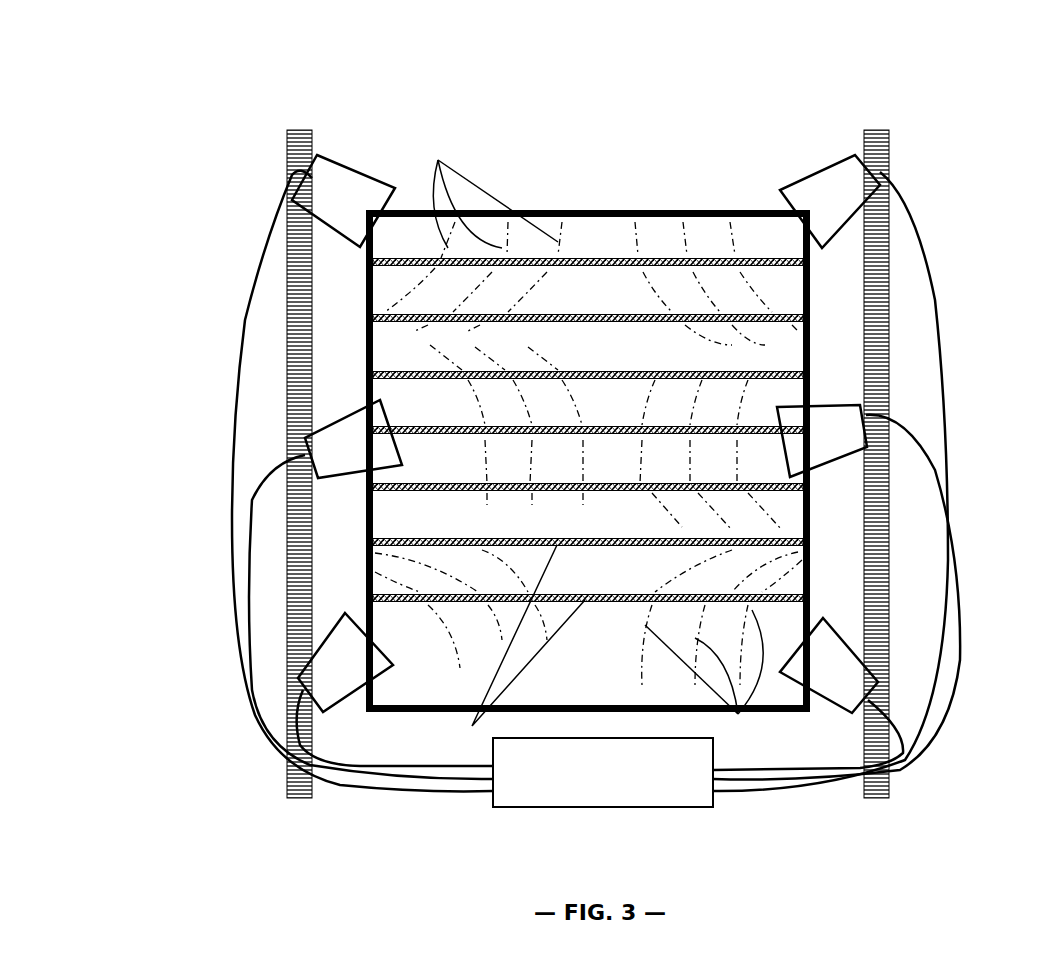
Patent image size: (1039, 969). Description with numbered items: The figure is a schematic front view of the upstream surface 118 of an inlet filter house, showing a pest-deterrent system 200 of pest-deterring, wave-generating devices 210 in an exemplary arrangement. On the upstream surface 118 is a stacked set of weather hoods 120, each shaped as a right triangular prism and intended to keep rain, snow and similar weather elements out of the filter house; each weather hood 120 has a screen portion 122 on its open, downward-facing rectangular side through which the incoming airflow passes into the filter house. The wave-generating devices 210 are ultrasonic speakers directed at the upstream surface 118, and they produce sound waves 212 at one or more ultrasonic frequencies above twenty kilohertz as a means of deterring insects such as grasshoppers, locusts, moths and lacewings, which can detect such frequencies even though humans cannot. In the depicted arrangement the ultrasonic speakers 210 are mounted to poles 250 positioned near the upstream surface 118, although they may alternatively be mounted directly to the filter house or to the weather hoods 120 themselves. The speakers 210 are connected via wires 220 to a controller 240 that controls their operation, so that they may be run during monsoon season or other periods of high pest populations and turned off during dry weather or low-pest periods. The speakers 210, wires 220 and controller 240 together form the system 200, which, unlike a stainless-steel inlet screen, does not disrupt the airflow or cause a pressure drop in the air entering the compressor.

The system of pest-deterring, wave-generating devices 200 is at (122, 122).
The upstream surface 118 is at (684, 207).
The weather hoods 120 is at (612, 300).
The screen portion 122 is at (468, 729).
The pest-deterring, wave-generating devices 210 is at (333, 192).
The sound waves 212 is at (588, 442).
The wires 220 is at (233, 487).
The controller 240 is at (637, 804).
The poles 250 is at (290, 625).